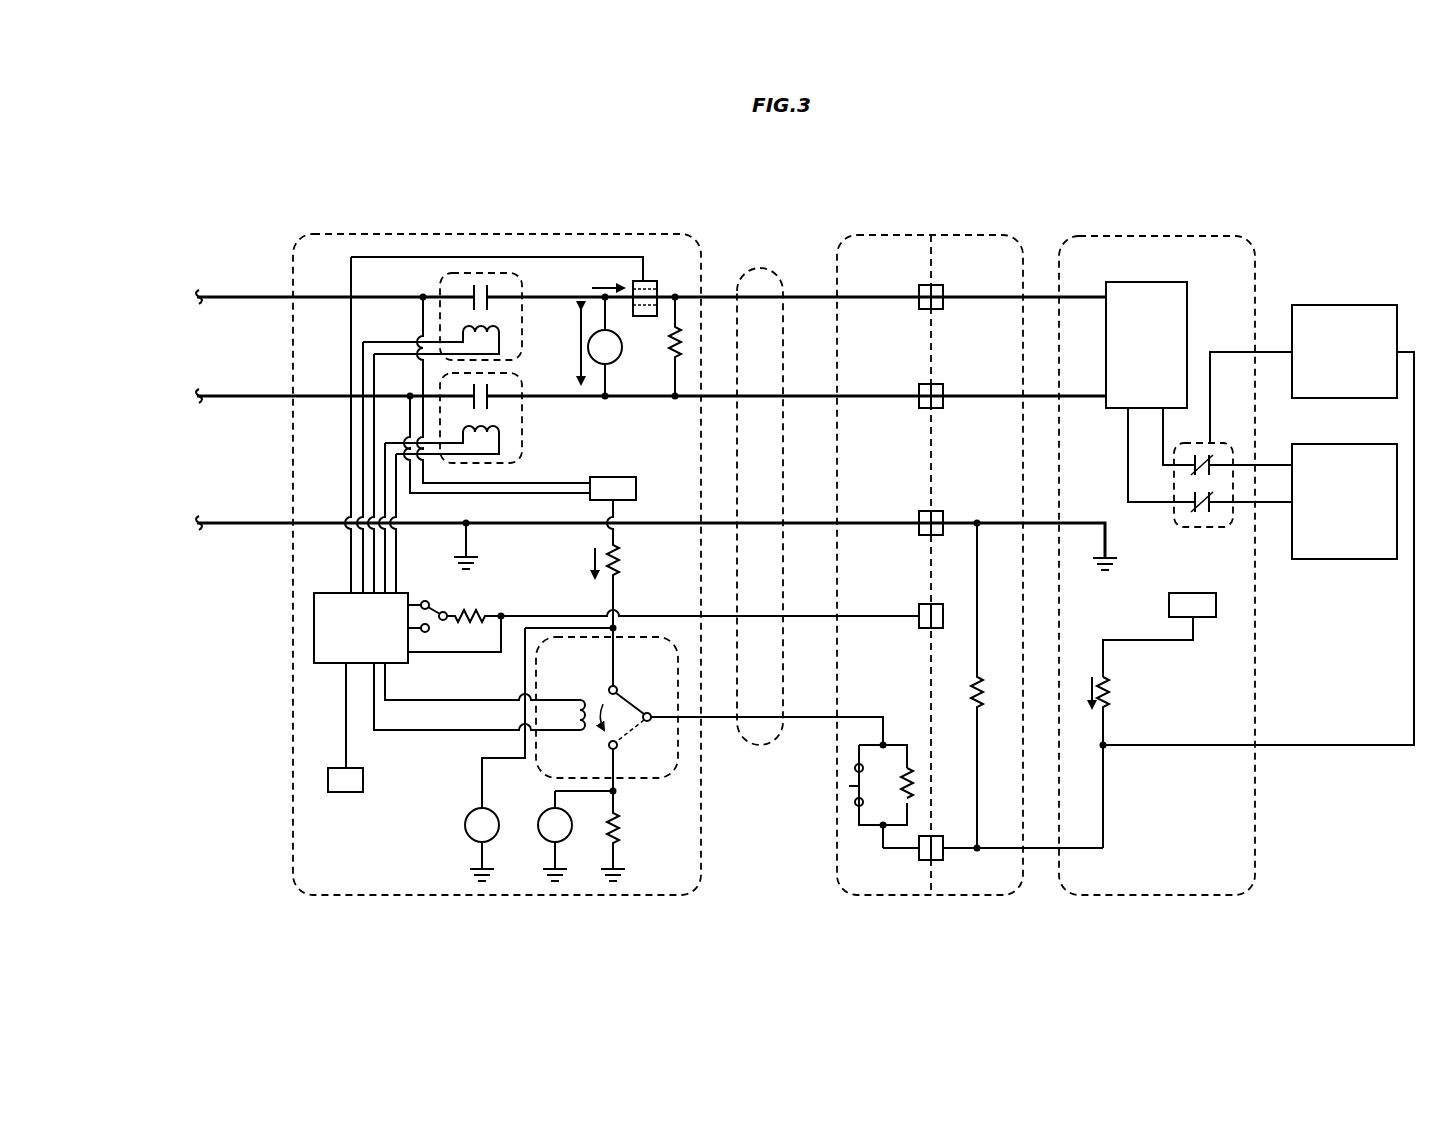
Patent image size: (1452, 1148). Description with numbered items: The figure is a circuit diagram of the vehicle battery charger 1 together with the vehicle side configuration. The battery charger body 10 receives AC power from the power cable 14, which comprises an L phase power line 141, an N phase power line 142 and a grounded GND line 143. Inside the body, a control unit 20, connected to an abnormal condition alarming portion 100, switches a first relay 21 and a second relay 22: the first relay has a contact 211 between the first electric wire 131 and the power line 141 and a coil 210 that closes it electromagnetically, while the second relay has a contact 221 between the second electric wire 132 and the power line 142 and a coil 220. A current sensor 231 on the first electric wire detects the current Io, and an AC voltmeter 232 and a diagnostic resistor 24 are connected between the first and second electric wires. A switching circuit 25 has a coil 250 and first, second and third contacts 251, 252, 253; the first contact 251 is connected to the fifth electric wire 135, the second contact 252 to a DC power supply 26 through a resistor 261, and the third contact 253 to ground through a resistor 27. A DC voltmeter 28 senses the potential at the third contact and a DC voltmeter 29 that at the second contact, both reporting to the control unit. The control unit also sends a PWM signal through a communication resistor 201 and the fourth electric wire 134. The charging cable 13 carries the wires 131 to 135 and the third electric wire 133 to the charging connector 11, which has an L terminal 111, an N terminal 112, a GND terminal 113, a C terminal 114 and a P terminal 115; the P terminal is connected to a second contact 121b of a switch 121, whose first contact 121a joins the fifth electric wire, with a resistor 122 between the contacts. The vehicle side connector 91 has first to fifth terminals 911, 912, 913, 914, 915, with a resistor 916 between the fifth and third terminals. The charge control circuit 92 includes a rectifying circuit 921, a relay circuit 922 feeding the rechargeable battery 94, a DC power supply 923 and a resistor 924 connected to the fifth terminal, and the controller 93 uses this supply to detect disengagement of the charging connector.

The vehicle battery charger 1 is at (373, 205).
The battery charger body 10 is at (543, 234).
The charging connector 11 is at (877, 234).
The charging cable 13 is at (762, 268).
The power cable 14 is at (257, 277).
The control unit 20 is at (340, 593).
The first relay 21 is at (465, 273).
The second relay 22 is at (525, 455).
The diagnostic resistor 24 is at (690, 345).
The switching circuit 25 is at (640, 637).
The DC power supply 26 is at (630, 477).
The resistor 27 is at (620, 833).
The DC voltmeter 28 is at (540, 820).
The DC voltmeter 29 is at (468, 820).
The vehicle side connector 91 is at (978, 234).
The charge control circuit 92 is at (1200, 236).
The controller 93 is at (1352, 305).
The rechargeable battery 94 is at (1352, 444).
The abnormal condition alarming portion 100 is at (363, 778).
The L terminal 111 is at (921, 286).
The N terminal 112 is at (921, 385).
The GND terminal 113 is at (921, 512).
The C terminal 114 is at (921, 604).
The P terminal 115 is at (924, 861).
The switch 121 is at (849, 824).
The first contact 121a is at (854, 768).
The second contact 121b is at (854, 802).
The resistor 122 is at (910, 779).
The first electric wire 131 is at (773, 296).
The second electric wire 132 is at (773, 395).
The third electric wire 133 is at (773, 522).
The fourth electric wire 134 is at (772, 615).
The fifth electric wire 135 is at (772, 717).
The L phase power line 141 is at (247, 296).
The N phase power line 142 is at (250, 395).
The GND line 143 is at (250, 522).
The communication resistor 201 is at (470, 612).
The coil 210 is at (498, 328).
The contact 211 is at (490, 291).
The coil 220 is at (498, 428).
The contact 221 is at (490, 390).
The electric current sensor 231 is at (650, 280).
The AC voltmeter 232 is at (620, 360).
The coil 250 is at (582, 698).
The first contact 251 is at (648, 713).
The second contact 252 is at (616, 687).
The third contact 253 is at (610, 750).
The resistor 261 is at (620, 566).
The first terminal 911 is at (940, 286).
The second terminal 912 is at (940, 385).
The third terminal 913 is at (940, 512).
The fourth terminal 914 is at (940, 604).
The fifth terminal 915 is at (944, 861).
The resistor 916 is at (976, 685).
The rectifying circuit 921 is at (1148, 282).
The relay circuit 922 is at (1195, 528).
The DC power supply 923 is at (1195, 593).
The resistor 924 is at (1110, 689).